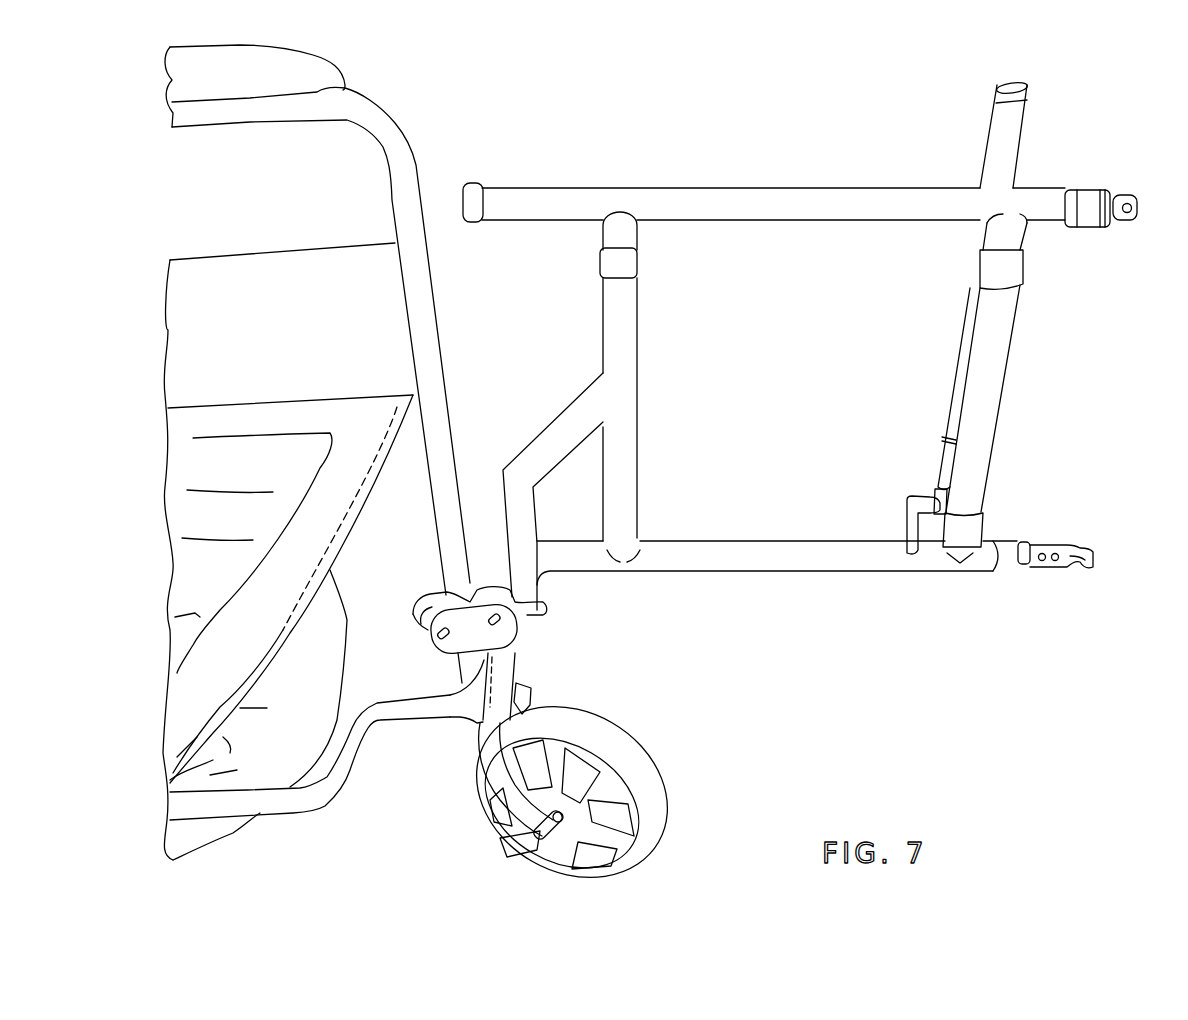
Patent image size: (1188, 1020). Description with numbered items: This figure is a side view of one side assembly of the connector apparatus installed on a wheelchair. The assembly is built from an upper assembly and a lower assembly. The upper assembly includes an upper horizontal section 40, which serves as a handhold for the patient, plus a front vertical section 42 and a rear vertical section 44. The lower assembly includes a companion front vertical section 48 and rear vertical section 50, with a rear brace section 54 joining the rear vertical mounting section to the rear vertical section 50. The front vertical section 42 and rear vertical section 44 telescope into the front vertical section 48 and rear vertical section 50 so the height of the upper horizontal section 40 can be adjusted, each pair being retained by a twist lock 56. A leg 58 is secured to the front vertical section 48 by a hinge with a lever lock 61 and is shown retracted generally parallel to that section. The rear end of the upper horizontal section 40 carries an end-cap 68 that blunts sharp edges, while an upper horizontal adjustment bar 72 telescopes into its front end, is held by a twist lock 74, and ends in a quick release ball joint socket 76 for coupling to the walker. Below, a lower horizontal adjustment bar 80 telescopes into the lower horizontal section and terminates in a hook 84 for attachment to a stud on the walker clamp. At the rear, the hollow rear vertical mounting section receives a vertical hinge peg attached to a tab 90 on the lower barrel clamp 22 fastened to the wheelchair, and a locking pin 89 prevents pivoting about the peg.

The lower barrel clamp 22 is at (485, 632).
The upper horizontal section 40 is at (767, 202).
The front vertical section 42 is at (1010, 239).
The rear vertical section 44 is at (627, 238).
The front vertical section 48 is at (990, 372).
The rear vertical section 50 is at (623, 473).
The rear brace section 54 is at (567, 427).
The twist lock 56 is at (638, 262).
The leg 58 is at (1010, 145).
The lever lock 61 is at (915, 515).
The end-cap 68 is at (474, 185).
The upper horizontal adjustment bar 72 is at (1106, 222).
The twist lock 74 is at (1082, 190).
The quick release ball joint socket 76 is at (1133, 211).
The lower horizontal adjustment bar 80 is at (1024, 566).
The hook 84 is at (1090, 565).
The locking pin 89 is at (505, 596).
The tab 90 is at (537, 613).